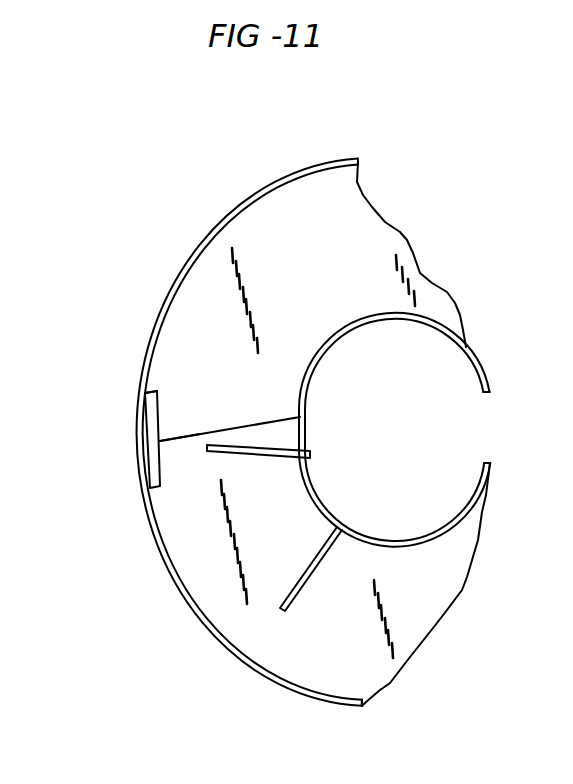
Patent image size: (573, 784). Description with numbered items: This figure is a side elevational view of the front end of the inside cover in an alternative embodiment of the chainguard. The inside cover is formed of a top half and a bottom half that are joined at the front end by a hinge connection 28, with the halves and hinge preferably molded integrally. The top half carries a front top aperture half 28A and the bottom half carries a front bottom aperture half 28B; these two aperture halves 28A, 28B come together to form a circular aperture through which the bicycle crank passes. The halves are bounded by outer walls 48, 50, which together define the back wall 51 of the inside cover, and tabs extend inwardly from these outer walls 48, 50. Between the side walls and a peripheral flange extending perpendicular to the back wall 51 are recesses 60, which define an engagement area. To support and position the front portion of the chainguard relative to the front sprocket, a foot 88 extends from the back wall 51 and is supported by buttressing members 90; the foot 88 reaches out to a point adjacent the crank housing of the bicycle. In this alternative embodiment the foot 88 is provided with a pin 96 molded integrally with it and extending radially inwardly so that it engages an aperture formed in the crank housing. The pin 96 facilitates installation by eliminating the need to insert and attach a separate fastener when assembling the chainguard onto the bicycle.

The outer wall 48 is at (222, 258).
The hinge connection 28 is at (170, 441).
The front top aperture half 28A is at (377, 322).
The front bottom aperture half 28B is at (437, 525).
The recess 60 is at (150, 458).
The back wall 51 is at (180, 527).
The buttressing member 90 is at (245, 457).
The outer wall 50 is at (322, 668).
The foot 88 is at (303, 477).
The pin 96 is at (320, 494).